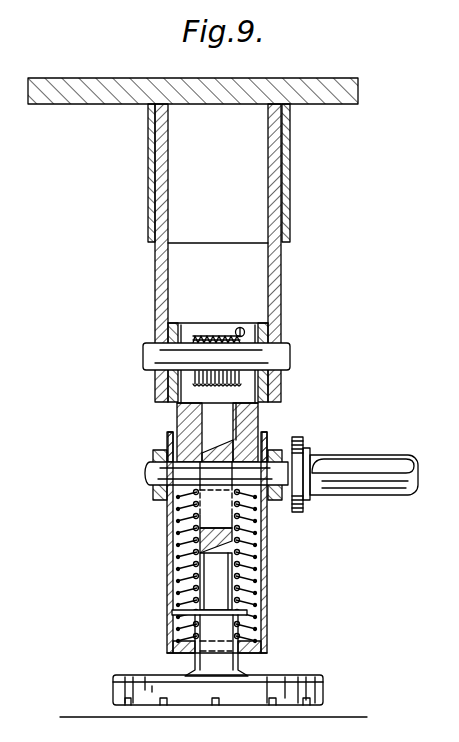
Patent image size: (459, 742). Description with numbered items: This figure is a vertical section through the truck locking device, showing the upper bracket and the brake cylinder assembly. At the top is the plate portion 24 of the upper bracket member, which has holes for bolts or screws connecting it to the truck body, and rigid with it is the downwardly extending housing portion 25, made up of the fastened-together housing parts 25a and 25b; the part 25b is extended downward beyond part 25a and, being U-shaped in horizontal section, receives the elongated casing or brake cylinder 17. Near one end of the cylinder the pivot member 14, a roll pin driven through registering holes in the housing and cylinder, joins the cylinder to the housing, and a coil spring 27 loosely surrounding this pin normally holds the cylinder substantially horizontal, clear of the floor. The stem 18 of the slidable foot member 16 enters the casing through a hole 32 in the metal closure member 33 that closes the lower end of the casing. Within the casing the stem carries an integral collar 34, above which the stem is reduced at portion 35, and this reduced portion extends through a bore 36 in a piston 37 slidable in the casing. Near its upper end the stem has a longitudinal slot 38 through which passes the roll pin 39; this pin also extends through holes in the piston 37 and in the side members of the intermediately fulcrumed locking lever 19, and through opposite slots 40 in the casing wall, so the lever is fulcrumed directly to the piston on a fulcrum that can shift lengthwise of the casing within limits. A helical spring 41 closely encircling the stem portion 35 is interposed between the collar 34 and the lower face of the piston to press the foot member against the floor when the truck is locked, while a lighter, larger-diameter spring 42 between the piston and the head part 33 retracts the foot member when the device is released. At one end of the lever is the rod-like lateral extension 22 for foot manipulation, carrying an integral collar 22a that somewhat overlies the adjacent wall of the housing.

The pivot member 14 is at (292, 353).
The slidable foot member 16 is at (313, 680).
The elongated casing or brake cylinder 17 is at (264, 585).
The stem 18 is at (200, 664).
The intermediately fulcrumed locking lever 19 is at (155, 491).
The rod-like lateral extension 22 is at (329, 463).
The integral collar 22a is at (303, 443).
The plate portion 24 is at (97, 97).
The housing portion 25 is at (262, 208).
The housing part 25a is at (291, 218).
The housing part 25b is at (271, 289).
The coil spring 27 is at (210, 337).
The hole 32 is at (248, 647).
The metal closure member 33 is at (176, 646).
The integral collar 34 is at (181, 612).
The reduced stem portion 35 is at (216, 592).
The bore 36 is at (258, 423).
The piston 37 is at (183, 418).
The longitudinal slot 38 is at (214, 510).
The roll pin 39 is at (146, 472).
The slots 40 is at (168, 441).
The helical spring 41 is at (178, 584).
The lighter spring 42 is at (201, 548).